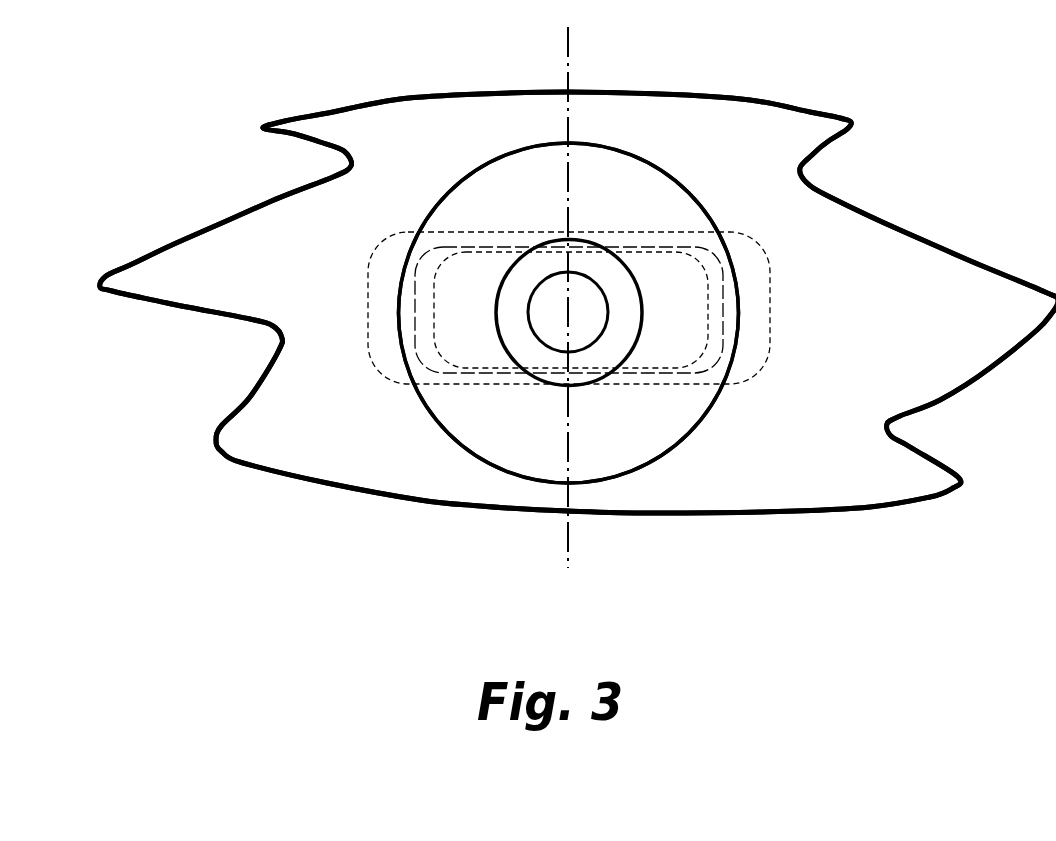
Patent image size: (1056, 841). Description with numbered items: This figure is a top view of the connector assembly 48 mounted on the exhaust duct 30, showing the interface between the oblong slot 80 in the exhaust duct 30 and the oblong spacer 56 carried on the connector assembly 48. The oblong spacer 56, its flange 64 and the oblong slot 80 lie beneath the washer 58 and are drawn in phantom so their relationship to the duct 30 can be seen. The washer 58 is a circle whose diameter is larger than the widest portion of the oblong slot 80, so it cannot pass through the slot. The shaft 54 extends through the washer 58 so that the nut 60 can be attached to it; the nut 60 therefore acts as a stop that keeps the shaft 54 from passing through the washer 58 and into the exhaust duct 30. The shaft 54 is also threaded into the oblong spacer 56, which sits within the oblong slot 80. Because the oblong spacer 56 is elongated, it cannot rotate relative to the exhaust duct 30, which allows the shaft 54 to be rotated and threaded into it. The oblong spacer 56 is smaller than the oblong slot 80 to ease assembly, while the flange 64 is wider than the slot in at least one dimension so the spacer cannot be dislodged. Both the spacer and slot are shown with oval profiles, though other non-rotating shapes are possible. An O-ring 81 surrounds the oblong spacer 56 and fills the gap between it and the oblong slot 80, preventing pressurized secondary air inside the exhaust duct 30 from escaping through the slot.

The exhaust duct 30 is at (876, 313).
The connector assembly 48 is at (358, 227).
The shaft 54 is at (592, 303).
The oblong spacer 56 is at (665, 350).
The washer 58 is at (505, 190).
The nut 60 is at (525, 347).
The flange 64 is at (752, 308).
The oblong slot 80 is at (413, 308).
The O-ring 81 is at (702, 265).